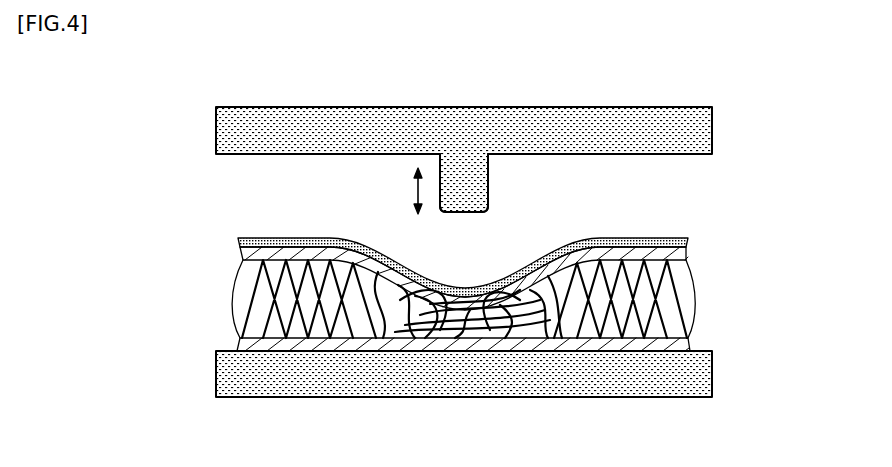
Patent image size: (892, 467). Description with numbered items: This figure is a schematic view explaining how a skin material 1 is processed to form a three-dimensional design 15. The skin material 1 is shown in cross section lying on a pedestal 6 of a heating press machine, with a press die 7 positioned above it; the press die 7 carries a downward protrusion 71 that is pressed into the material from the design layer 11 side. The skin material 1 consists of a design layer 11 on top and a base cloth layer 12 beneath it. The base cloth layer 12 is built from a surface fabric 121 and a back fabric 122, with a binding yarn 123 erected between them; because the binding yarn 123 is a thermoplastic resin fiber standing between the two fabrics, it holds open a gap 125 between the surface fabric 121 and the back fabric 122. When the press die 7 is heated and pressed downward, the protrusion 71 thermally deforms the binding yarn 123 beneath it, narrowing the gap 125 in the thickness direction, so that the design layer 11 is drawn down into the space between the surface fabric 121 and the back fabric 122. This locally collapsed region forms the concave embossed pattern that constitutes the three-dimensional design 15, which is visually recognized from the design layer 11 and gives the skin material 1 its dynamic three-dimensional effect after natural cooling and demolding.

The skin material 1 is at (258, 226).
The lower plate / substrate 6 is at (380, 392).
The upper plate / pressing member 7 is at (530, 113).
The protrusion of pressing member 71 is at (488, 197).
The design layer 11 is at (700, 247).
The base cloth layer 12 is at (459, 299).
The surface fabric 121 is at (240, 250).
The back fabric 122 is at (234, 347).
The binding yarn 123 is at (240, 322).
The gap 125 is at (344, 250).
The three-dimensional design 15 is at (466, 285).